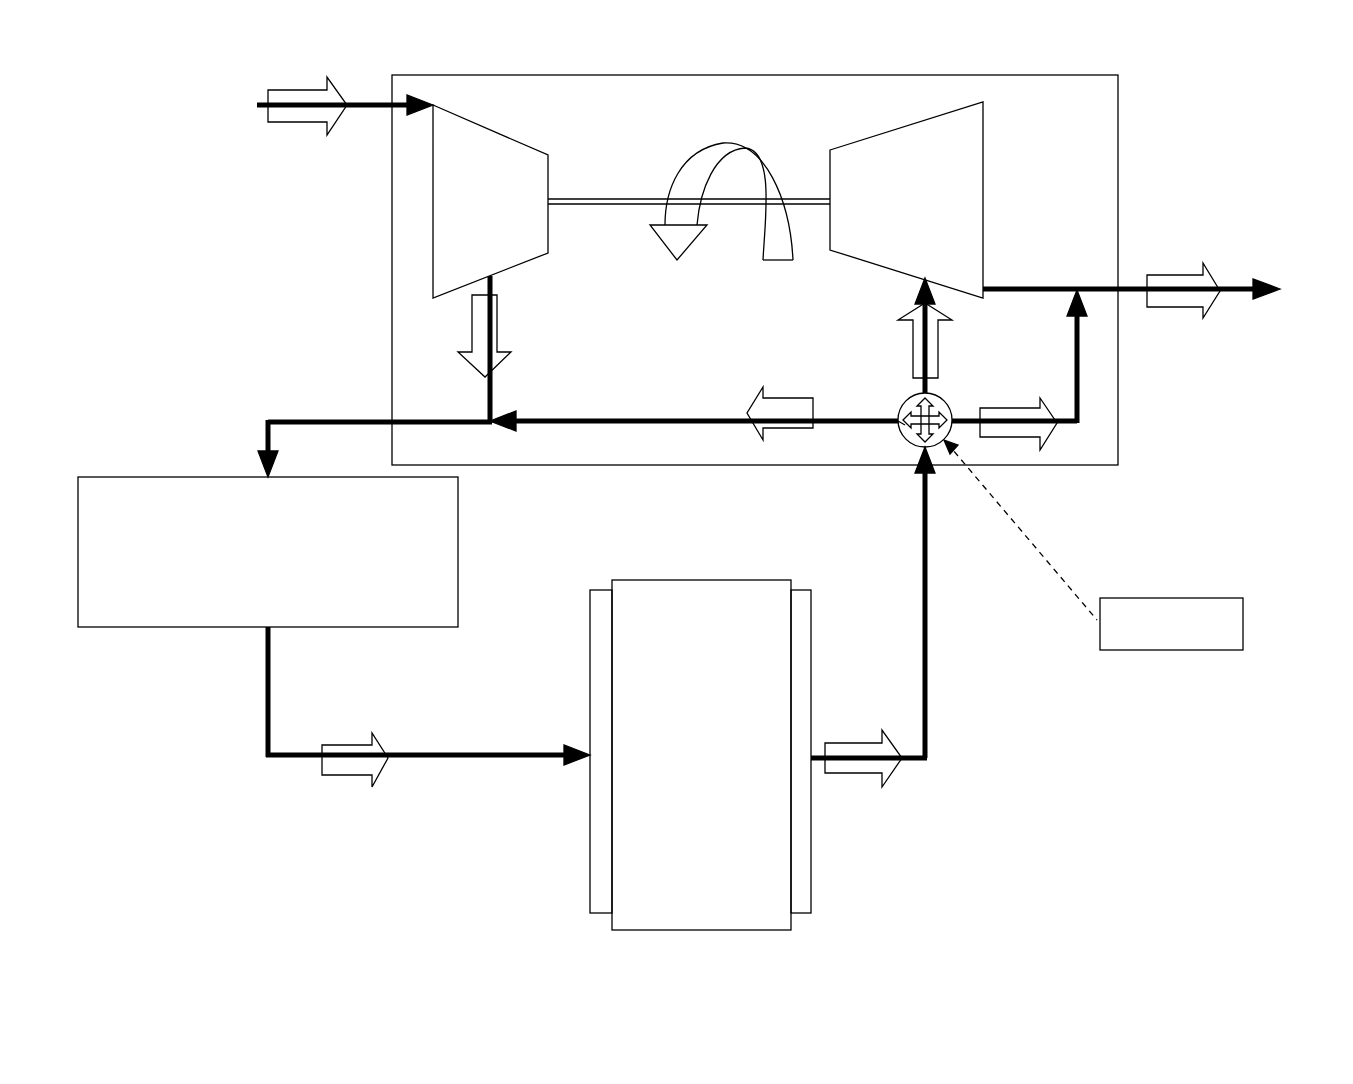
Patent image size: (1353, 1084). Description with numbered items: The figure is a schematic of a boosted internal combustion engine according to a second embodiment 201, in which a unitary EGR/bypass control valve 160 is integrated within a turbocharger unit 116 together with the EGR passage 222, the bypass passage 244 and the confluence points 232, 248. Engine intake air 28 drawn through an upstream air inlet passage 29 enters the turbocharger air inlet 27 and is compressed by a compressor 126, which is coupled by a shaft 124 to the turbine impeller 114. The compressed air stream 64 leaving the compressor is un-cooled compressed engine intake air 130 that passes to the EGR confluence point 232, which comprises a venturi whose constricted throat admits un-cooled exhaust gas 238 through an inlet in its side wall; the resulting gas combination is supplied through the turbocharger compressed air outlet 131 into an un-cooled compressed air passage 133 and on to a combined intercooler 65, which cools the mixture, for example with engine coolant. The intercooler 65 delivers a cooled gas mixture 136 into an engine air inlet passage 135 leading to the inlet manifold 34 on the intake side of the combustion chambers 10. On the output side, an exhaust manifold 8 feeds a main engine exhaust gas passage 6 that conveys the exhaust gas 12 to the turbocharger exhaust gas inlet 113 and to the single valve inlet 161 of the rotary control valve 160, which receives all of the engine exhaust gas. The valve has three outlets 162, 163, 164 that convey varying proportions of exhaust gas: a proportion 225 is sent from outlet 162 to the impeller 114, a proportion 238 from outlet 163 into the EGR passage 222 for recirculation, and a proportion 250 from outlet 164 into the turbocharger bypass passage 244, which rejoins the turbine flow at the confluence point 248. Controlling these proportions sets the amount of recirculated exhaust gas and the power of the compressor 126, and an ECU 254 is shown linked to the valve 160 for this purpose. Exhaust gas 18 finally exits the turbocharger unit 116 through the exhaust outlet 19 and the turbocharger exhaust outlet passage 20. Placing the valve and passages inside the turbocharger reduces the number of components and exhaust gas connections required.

The second embodiment 201 is at (1162, 765).
The turbocharger unit 116 is at (1135, 150).
The upstream air inlet passage 29 is at (257, 108).
The engine intake air 28 is at (313, 123).
The turbocharger air inlet 27 is at (388, 108).
The compressor 126 is at (516, 219).
The impeller 114 is at (930, 215).
The turbocharger shaft 124 is at (607, 205).
The un-cooled compressed engine intake air 130 is at (465, 327).
The compressed air flow 64 is at (490, 418).
The un-cooled compressed air passage 133 is at (300, 422).
The turbocharger compressed air outlet 131 is at (390, 422).
The EGR passage 222 is at (702, 418).
The EGR confluence point 232 is at (493, 417).
The recirculated exhaust gas 238 is at (790, 397).
The EGR/bypass control valve 160 is at (893, 447).
The valve outlet 162 is at (923, 393).
The exhaust gas proportion to impeller 225 is at (912, 340).
The valve outlet 164 is at (955, 417).
The valve outlet 163 is at (893, 442).
The valve inlet 161 is at (935, 457).
The exhaust passage 113 is at (922, 478).
The turbocharger bypass passage 244 is at (1085, 347).
The bypass confluence point 248 is at (1077, 292).
The exhaust gas proportion to bypass 250 is at (1007, 425).
The exhaust outlet passage 19 is at (1118, 283).
The turbocharger exhaust outlet passage 20 is at (1247, 292).
The exhaust gas 18 is at (1185, 310).
The combined intercooler 65 is at (287, 610).
The engine air inlet passage 135 is at (267, 698).
The inlet manifold 34 is at (590, 800).
The cooled gas mixture 136 is at (333, 770).
The combustion chambers 10 is at (719, 815).
The exhaust manifold 8 is at (811, 807).
The main engine exhaust gas passage 6 is at (925, 582).
The exhaust gas 12 is at (838, 742).
The ECU 254 is at (1228, 639).